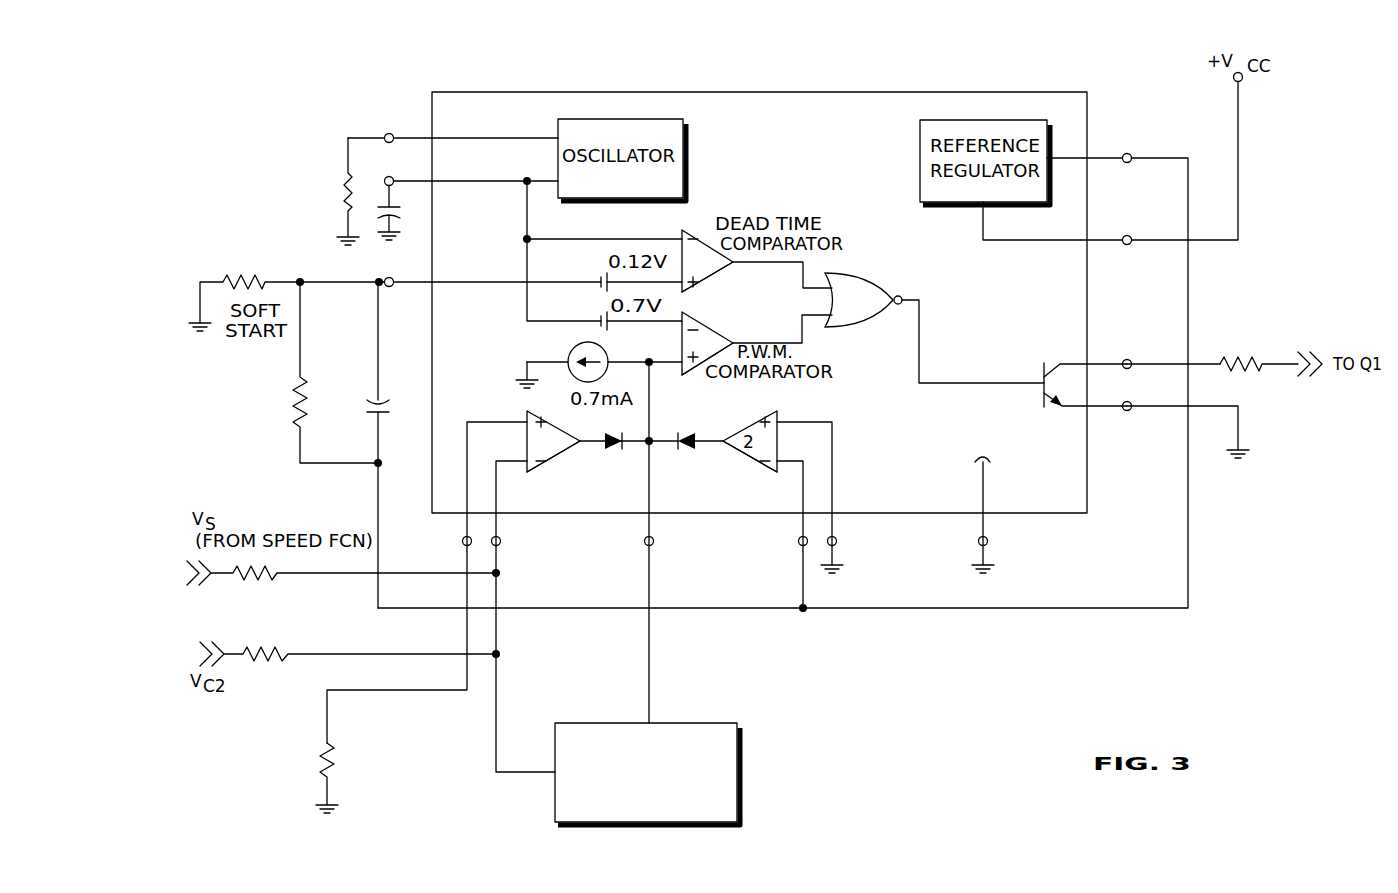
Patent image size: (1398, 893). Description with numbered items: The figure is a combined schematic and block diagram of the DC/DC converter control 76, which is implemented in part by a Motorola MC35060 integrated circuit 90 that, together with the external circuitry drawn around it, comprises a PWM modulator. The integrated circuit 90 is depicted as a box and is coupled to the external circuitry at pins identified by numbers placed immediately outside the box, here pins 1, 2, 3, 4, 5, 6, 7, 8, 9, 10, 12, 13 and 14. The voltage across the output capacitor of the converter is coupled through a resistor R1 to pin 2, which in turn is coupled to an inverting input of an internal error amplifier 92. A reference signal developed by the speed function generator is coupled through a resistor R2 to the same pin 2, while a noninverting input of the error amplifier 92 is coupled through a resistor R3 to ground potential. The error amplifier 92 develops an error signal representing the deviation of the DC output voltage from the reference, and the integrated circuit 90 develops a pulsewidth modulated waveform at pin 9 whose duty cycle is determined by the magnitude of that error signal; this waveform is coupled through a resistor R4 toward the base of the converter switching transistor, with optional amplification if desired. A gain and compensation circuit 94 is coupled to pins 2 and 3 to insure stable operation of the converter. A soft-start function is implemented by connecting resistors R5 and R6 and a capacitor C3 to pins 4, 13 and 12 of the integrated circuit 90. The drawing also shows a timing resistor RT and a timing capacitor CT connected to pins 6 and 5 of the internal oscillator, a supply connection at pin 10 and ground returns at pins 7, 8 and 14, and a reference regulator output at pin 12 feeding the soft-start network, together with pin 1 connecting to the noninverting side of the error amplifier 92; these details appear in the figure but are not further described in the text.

The DC/DC converter control 76 is at (920, 625).
The integrated circuit 90 is at (1062, 513).
The error amplifier 92 is at (527, 413).
The gain and compensation circuit 94 is at (737, 750).
The pin 1 is at (427, 582).
The pin 2 is at (524, 616).
The input 3 is at (642, 542).
The pin 4 is at (533, 293).
The pin 5 is at (470, 170).
The pin 6 is at (453, 127).
The pin 7 is at (985, 502).
The pin 8 is at (1185, 430).
The pin 9 is at (1170, 353).
The pin 10 is at (1113, 159).
The pin 12 is at (783, 370).
The pin 13 is at (790, 536).
The pin 14 is at (822, 497).
The resistor R1 is at (286, 660).
The resistor R2 is at (270, 578).
The resistor R3 is at (330, 752).
The resistor R4 is at (1255, 362).
The resistor R5 is at (262, 270).
The resistor R6 is at (288, 400).
The timing resistor RT is at (347, 176).
The timing capacitor CT is at (395, 216).
The capacitor C3 is at (372, 413).